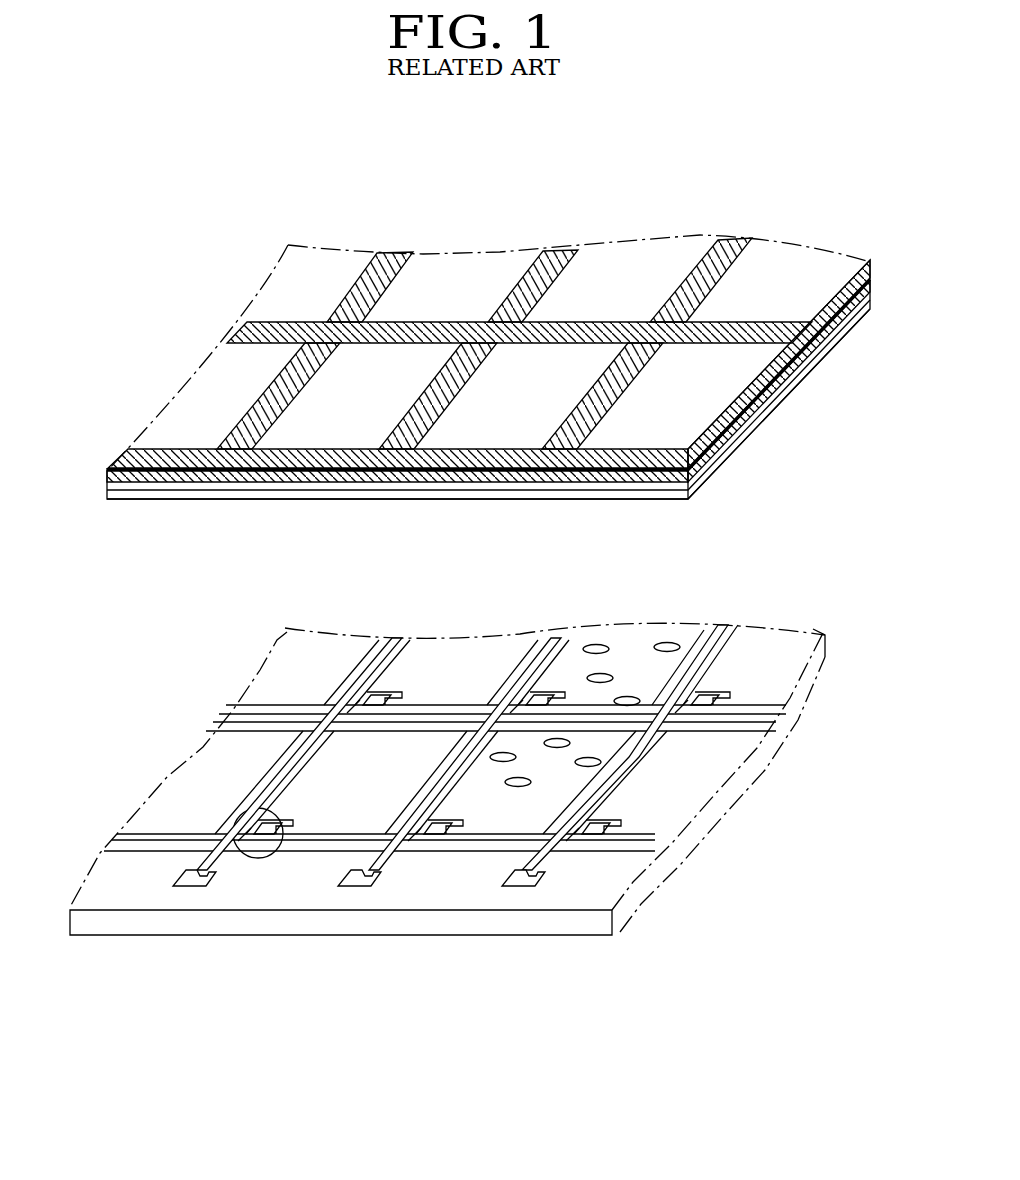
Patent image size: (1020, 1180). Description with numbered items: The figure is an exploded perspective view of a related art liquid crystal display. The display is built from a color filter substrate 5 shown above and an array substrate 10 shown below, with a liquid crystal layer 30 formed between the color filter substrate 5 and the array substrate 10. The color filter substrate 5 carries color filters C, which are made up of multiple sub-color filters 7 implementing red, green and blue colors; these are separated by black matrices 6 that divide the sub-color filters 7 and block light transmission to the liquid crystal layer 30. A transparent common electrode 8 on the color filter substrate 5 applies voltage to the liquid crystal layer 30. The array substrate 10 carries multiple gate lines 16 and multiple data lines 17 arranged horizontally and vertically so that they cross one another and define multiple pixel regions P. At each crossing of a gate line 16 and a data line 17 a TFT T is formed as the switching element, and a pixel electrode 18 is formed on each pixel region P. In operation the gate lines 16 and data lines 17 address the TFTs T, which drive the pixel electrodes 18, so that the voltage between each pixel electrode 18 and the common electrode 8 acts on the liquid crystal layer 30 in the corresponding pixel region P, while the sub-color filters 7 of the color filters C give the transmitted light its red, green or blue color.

The color filters C is at (488, 408).
The color filter substrate 5 is at (663, 488).
The black matrices 6 is at (712, 463).
The sub-color filters 7 is at (737, 381).
The transparent common electrode 8 is at (647, 497).
The array substrate 10 is at (440, 925).
The gate lines 16 is at (497, 848).
The data lines 17 is at (385, 865).
The pixel electrodes 18 is at (598, 808).
The liquid crystal layer 30 is at (600, 678).
The pixel regions P is at (646, 739).
The TFT T is at (263, 866).